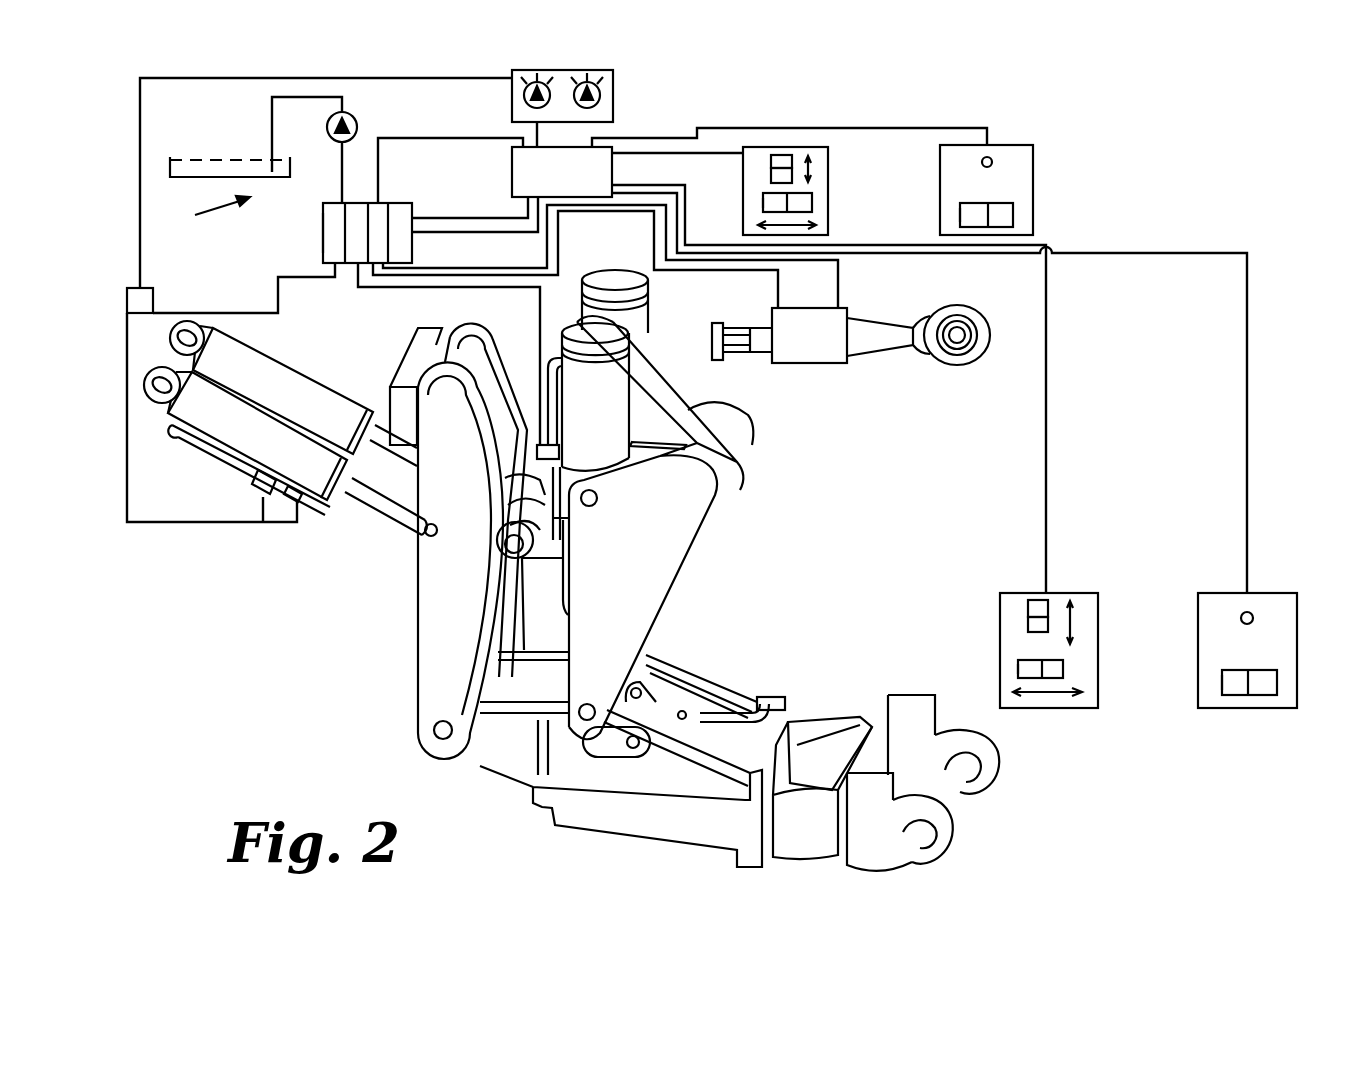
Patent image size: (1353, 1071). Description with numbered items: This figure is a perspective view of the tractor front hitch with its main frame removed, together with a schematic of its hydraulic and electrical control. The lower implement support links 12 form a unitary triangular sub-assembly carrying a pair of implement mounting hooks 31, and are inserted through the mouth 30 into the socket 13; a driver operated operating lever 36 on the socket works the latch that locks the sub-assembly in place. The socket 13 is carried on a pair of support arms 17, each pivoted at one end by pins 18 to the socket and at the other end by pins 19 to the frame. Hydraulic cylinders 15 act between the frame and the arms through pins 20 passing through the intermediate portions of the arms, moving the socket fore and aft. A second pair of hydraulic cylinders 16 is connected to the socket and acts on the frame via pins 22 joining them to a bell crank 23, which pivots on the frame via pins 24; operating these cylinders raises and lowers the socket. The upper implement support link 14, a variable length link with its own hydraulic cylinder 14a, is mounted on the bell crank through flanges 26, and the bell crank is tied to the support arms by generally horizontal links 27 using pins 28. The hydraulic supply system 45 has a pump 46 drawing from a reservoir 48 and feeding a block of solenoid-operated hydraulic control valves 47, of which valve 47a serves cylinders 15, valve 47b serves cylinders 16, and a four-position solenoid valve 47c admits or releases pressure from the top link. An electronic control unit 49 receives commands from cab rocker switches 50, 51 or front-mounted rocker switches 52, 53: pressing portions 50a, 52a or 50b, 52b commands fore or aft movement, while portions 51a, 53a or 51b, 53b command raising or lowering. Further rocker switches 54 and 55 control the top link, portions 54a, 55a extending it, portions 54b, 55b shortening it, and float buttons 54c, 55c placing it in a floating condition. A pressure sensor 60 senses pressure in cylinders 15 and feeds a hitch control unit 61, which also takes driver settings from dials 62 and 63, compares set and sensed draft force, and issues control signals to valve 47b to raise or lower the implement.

The lower implement support links 12 is at (807, 832).
The socket 13 is at (657, 805).
The upper implement support link 14 is at (736, 335).
The hydraulic cylinder 14a is at (822, 345).
The hydraulic cylinders 15 is at (300, 405).
The hydraulic cylinders 16 is at (612, 285).
The support arms 17 is at (511, 365).
The pins 18 is at (436, 737).
The pins 19 is at (440, 398).
The pins 20 is at (428, 523).
The pins 22 is at (597, 503).
The bell crank 23 is at (668, 568).
The pins 24 is at (583, 718).
The flanges 26 is at (688, 382).
The links 27 is at (550, 543).
The pins 28 is at (508, 548).
The mouth 30 is at (814, 730).
The implement mounting hooks 31 is at (900, 858).
The operating lever 36 is at (725, 718).
The hydraulic supply system 45 is at (205, 216).
The pump 46 is at (353, 118).
The block of solenoid-operated hydraulic control valves 47 is at (402, 210).
The control valve 47a is at (332, 232).
The control valve 47b is at (352, 262).
The four-position solenoid valve 47c is at (375, 210).
The reservoir 48 is at (218, 167).
The electronic control unit 49 is at (512, 173).
The rocker switch 50 is at (812, 207).
The switch portion 50a is at (795, 202).
The switch portion 50b is at (763, 205).
The rocker switch 51 is at (770, 162).
The switch portion 51a is at (786, 156).
The switch portion 51b is at (771, 171).
The rocker switch 52 is at (1063, 670).
The switch portion 52a is at (1048, 668).
The switch portion 52b is at (1020, 670).
The rocker switch 53 is at (1028, 612).
The switch portion 53a is at (1036, 600).
The switch portion 53b is at (1028, 624).
The rocker switch 54 is at (1033, 178).
The switch portion 54a is at (1013, 215).
The switch portion 54b is at (960, 215).
The float button 54c is at (993, 160).
The rocker switch 55 is at (1286, 638).
The switch portion 55a is at (1272, 692).
The switch portion 55b is at (1238, 692).
The float button 55c is at (1252, 612).
The pressure sensor 60 is at (145, 302).
The hitch control unit 61 is at (615, 88).
The dial 62 is at (530, 104).
The dial 63 is at (598, 104).